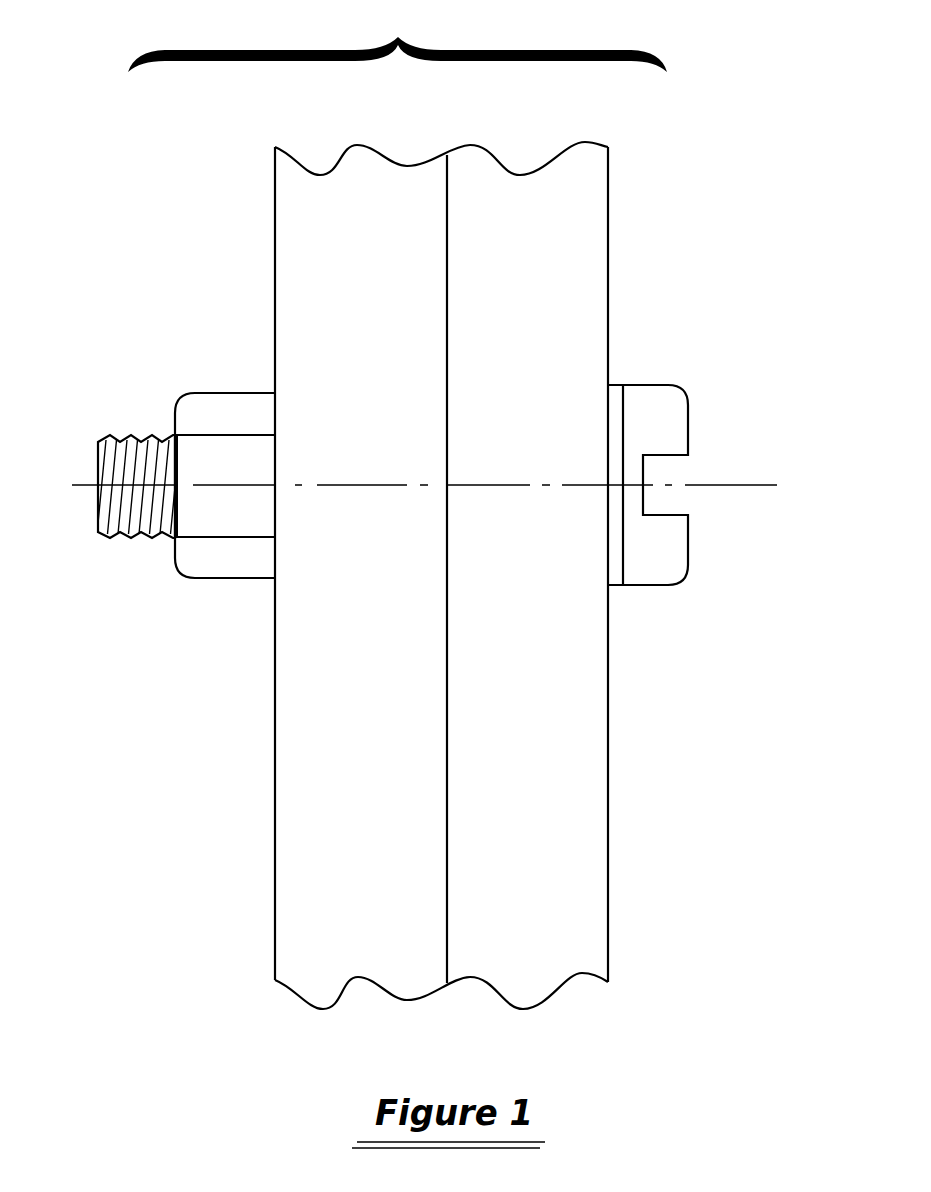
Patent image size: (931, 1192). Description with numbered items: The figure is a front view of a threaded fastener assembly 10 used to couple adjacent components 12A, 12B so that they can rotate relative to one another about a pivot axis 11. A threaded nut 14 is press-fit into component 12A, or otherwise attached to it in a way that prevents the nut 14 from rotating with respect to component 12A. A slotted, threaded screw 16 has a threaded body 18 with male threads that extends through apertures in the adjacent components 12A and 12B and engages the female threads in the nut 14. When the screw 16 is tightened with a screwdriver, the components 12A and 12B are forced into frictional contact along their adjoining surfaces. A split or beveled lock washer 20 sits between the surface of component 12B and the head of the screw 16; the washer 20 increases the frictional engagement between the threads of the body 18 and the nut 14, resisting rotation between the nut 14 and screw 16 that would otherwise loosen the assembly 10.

The threaded fastener assembly 10 is at (397, 36).
The pivot axis 11 is at (747, 485).
The adjacent component 12A is at (392, 683).
The adjacent component 12B is at (560, 683).
The threaded nut 14 is at (220, 405).
The slotted, threaded screw 16 is at (667, 405).
The threaded body 18 is at (140, 535).
The lock washer 20 is at (617, 575).